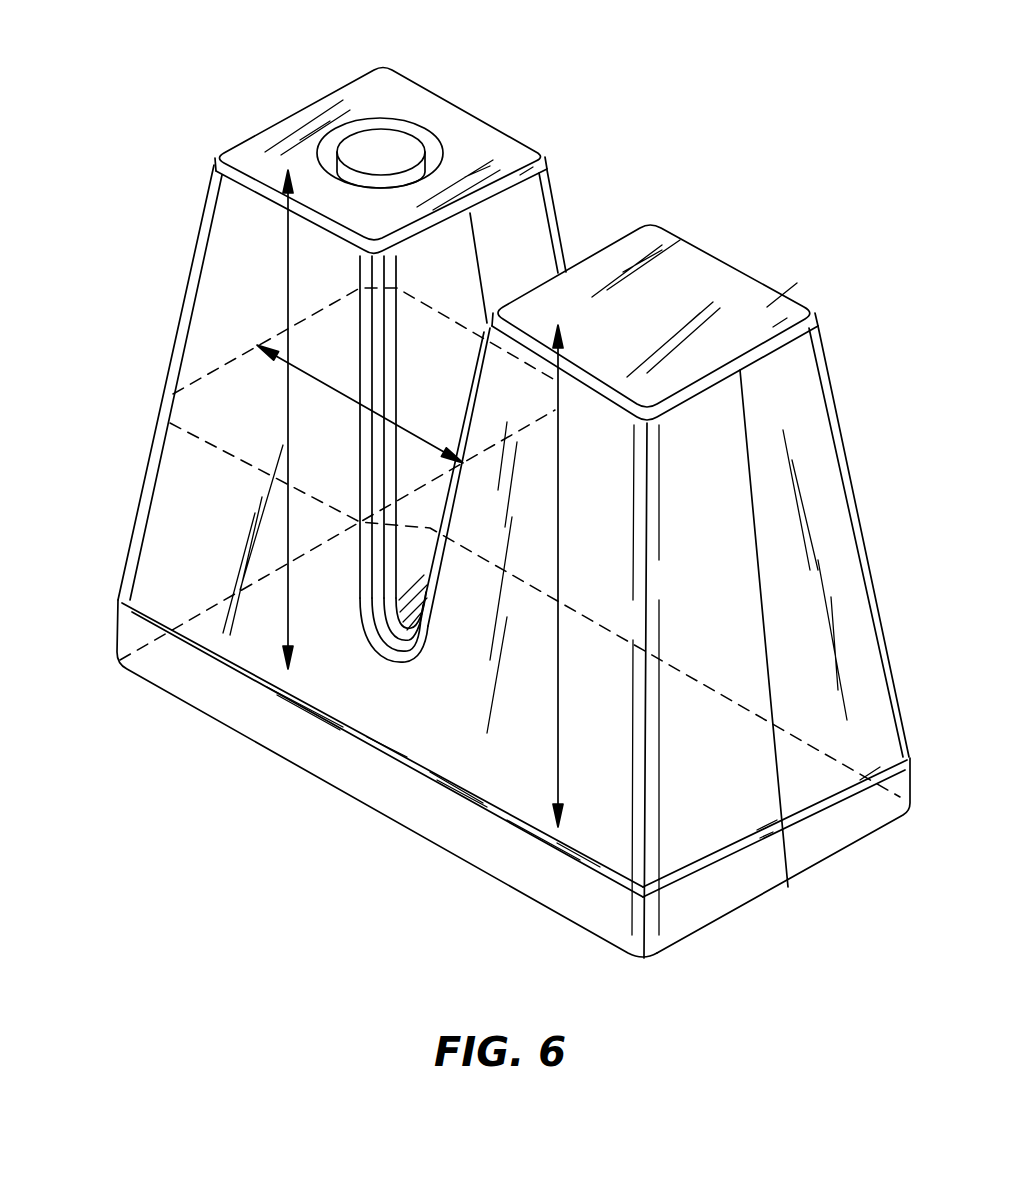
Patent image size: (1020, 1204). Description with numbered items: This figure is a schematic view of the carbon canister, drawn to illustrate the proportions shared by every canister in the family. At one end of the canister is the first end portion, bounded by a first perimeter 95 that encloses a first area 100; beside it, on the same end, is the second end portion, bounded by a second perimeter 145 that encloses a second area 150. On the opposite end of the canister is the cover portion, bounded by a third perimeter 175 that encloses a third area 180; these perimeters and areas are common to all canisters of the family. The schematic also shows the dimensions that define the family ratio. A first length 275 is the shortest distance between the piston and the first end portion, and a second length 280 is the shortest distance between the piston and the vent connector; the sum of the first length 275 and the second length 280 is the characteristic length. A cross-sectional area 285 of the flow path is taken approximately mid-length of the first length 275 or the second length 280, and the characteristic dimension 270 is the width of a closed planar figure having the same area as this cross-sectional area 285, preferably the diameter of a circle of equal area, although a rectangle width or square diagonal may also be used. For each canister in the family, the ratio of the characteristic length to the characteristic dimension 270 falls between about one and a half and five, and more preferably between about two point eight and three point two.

The first perimeter 95 is at (472, 113).
The first area 100 is at (513, 152).
The second perimeter 145 is at (747, 270).
The second area 150 is at (770, 298).
The third perimeter 175 is at (727, 900).
The third area 180 is at (353, 757).
The characteristic dimension 270 is at (318, 367).
The first length 275 is at (287, 420).
The second length 280 is at (557, 738).
The cross-sectional area 285 is at (203, 373).